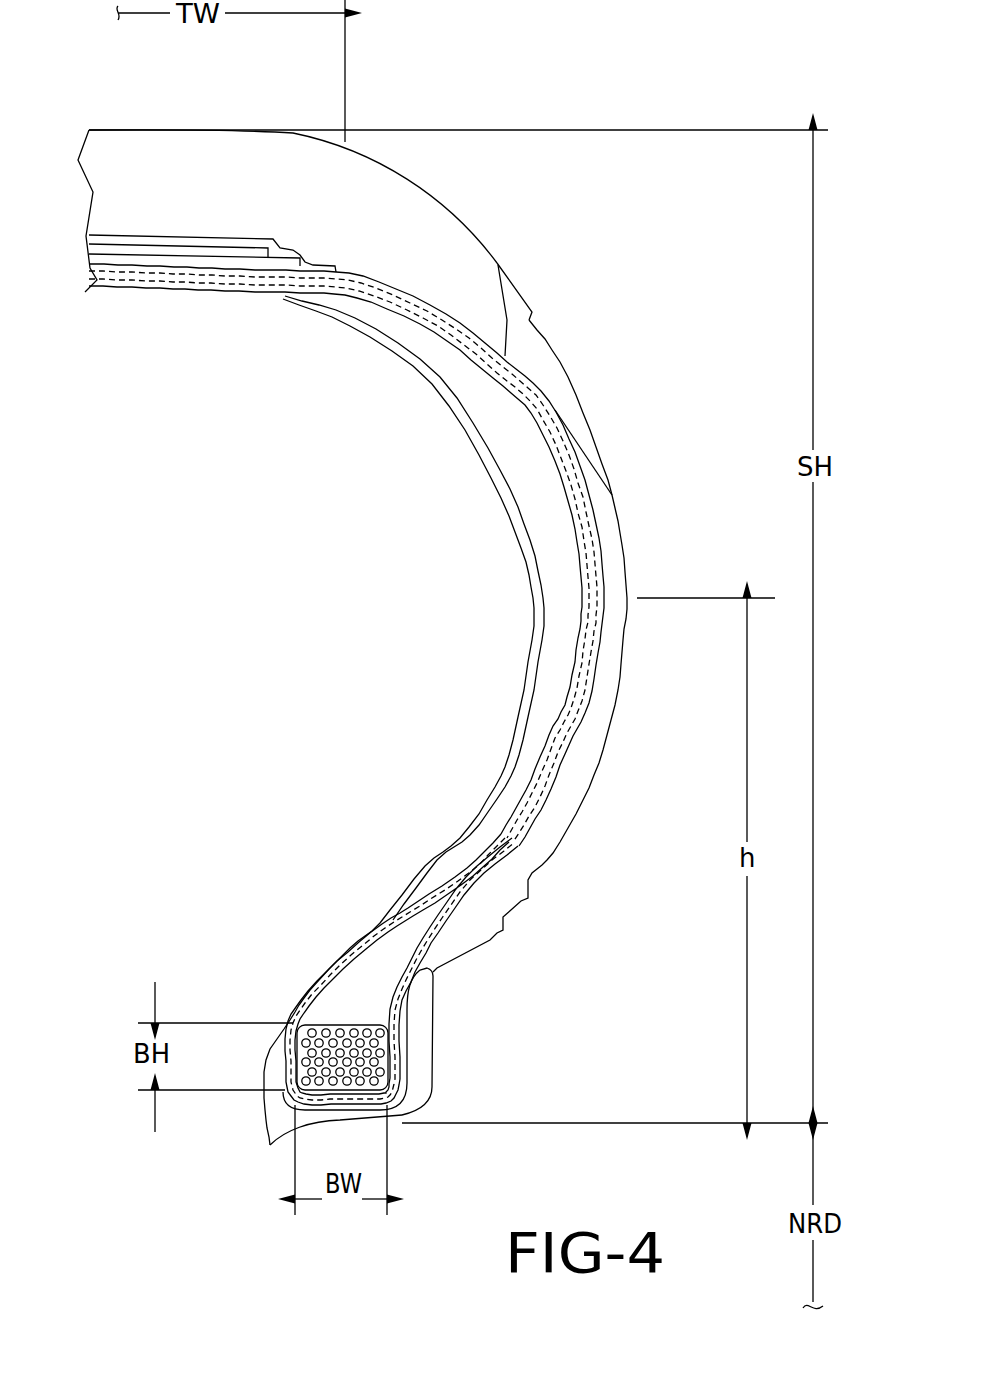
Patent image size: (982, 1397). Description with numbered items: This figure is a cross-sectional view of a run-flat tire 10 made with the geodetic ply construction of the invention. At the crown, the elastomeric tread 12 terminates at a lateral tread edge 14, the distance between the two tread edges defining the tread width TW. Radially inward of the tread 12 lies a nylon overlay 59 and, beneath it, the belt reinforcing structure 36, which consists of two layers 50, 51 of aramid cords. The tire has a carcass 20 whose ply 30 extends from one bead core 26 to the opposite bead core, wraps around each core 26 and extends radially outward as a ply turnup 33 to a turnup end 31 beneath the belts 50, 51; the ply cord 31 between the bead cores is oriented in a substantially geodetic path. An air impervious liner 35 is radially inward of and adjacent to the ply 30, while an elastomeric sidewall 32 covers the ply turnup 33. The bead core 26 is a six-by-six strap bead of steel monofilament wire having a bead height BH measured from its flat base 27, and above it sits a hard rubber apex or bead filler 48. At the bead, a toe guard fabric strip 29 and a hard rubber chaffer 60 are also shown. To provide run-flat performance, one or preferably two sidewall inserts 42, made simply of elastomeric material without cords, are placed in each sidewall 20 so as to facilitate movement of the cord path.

The tire 10 is at (604, 285).
The elastomeric tread 12 is at (114, 130).
The lateral tread edge 14 is at (354, 148).
The carcass 20 is at (628, 558).
The bead core 26 is at (337, 1060).
The flat base 27 is at (361, 1092).
The toe guard fabric strip 29 is at (397, 1088).
The ply 30 is at (113, 276).
The ply cord 31 is at (545, 768).
The elastomeric sidewall 32 is at (608, 655).
The ply turnup 33 is at (208, 267).
The air impervious liner 35 is at (422, 882).
The belt reinforcing structure 36 is at (118, 236).
The sidewall insert 42 is at (560, 612).
The apex or bead filler 48 is at (372, 966).
The belt layer 50 is at (252, 250).
The belt layer 51 is at (276, 262).
The overlay 59 is at (172, 232).
The hard rubber chaffer 60 is at (420, 1022).